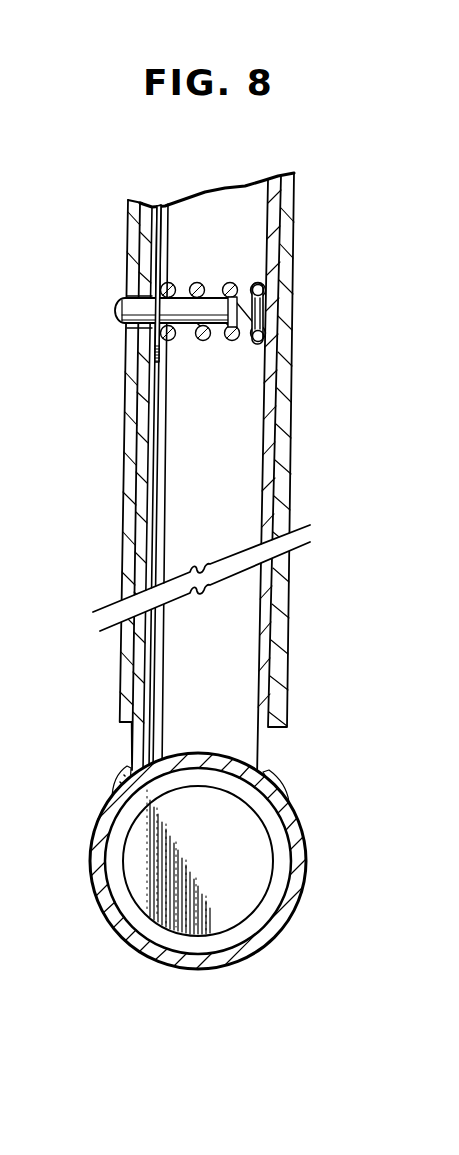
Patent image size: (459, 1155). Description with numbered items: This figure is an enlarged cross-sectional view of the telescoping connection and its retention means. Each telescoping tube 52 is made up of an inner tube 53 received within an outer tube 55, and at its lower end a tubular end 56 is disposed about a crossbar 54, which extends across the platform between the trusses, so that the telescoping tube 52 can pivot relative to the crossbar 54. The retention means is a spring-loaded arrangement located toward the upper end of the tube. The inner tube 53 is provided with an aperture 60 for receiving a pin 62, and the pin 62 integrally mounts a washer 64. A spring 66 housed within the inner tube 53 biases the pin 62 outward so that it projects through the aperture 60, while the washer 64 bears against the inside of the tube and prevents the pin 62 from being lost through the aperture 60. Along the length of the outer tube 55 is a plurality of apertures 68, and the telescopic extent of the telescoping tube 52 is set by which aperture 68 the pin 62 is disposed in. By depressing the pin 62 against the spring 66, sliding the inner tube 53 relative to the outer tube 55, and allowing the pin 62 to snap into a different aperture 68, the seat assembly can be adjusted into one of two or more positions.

The telescoping tube 52 is at (127, 208).
The inner tube 53 is at (258, 632).
The crossbar 54 is at (96, 857).
The outer tube 55 is at (283, 221).
The tubular end 56 is at (105, 810).
The aperture 60 is at (126, 297).
The pin 62 is at (184, 322).
The washer 64 is at (160, 272).
The spring 66 is at (233, 342).
The apertures 68 is at (121, 323).